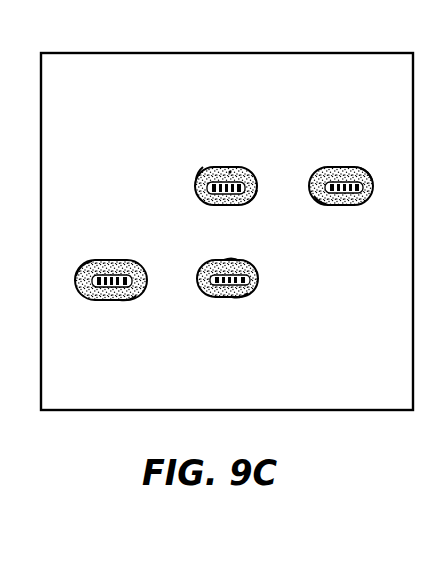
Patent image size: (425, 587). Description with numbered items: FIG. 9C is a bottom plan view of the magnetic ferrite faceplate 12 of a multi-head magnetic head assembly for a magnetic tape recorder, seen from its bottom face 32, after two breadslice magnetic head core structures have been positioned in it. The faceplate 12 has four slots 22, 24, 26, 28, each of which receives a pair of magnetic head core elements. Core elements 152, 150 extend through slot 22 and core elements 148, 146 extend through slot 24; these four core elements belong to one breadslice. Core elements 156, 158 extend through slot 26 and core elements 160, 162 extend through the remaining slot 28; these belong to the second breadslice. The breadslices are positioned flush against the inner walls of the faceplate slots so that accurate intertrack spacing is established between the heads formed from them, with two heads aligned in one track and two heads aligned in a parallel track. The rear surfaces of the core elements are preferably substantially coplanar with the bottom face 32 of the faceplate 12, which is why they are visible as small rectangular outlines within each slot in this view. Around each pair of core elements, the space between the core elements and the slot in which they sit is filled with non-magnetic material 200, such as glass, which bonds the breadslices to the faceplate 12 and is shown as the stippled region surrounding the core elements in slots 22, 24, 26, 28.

The magnetic ferrite faceplate 12 is at (135, 53).
The bottom face 32 is at (155, 110).
The slot 22 is at (117, 263).
The slot 24 is at (257, 272).
The slot 26 is at (235, 170).
The slot 28 is at (333, 170).
The magnetic head core element 146 is at (242, 297).
The magnetic head core element 148 is at (232, 260).
The magnetic head core element 150 is at (130, 295).
The magnetic head core element 152 is at (95, 264).
The magnetic head core element 156 is at (215, 173).
The magnetic head core element 158 is at (245, 190).
The magnetic head core element 160 is at (317, 197).
The magnetic head core element 162 is at (367, 170).
The non-magnetic material 200 is at (227, 232).